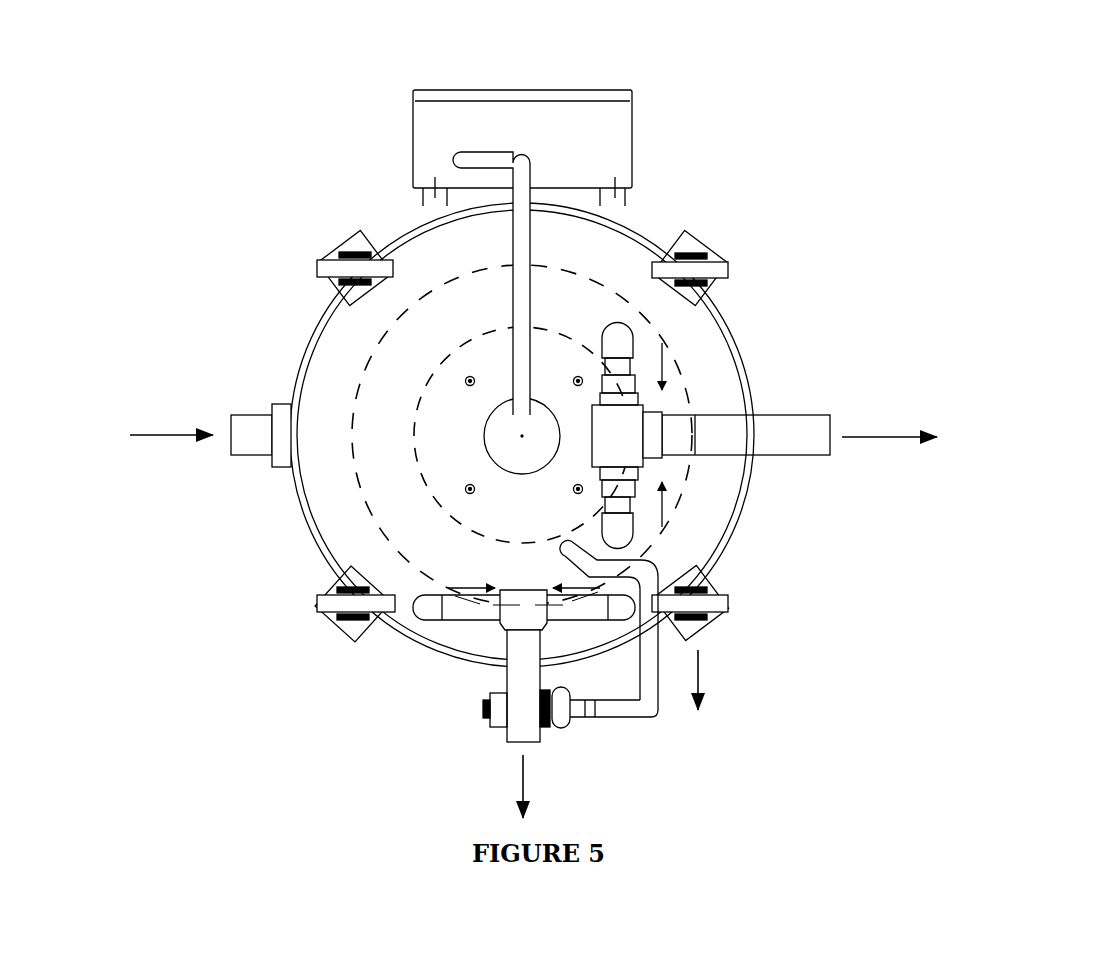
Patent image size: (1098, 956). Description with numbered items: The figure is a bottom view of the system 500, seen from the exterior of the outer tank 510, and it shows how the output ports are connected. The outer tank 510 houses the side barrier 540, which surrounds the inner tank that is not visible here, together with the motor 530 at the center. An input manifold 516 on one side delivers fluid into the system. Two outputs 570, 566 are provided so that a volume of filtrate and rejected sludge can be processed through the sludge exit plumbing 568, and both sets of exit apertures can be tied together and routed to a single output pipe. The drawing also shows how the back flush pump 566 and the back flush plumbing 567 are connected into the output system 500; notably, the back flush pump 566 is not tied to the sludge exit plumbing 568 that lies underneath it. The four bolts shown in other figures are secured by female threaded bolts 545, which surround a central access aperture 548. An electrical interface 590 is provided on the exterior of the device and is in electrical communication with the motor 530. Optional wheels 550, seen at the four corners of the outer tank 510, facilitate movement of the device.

The system 500 is at (1016, 96).
The outer tank 510 is at (310, 332).
The side barrier 540 is at (360, 378).
The motor 530 is at (425, 472).
The female threaded bolts 545 is at (466, 491).
The wheels 550 is at (730, 612).
The electrical interface 590 is at (634, 158).
The input manifold 516 is at (231, 416).
The central access aperture 548 is at (487, 443).
The output 570 is at (832, 413).
The sludge exit plumbing 568 is at (500, 626).
The back flush pump 566 is at (561, 727).
The back flush plumbing 567 is at (659, 715).